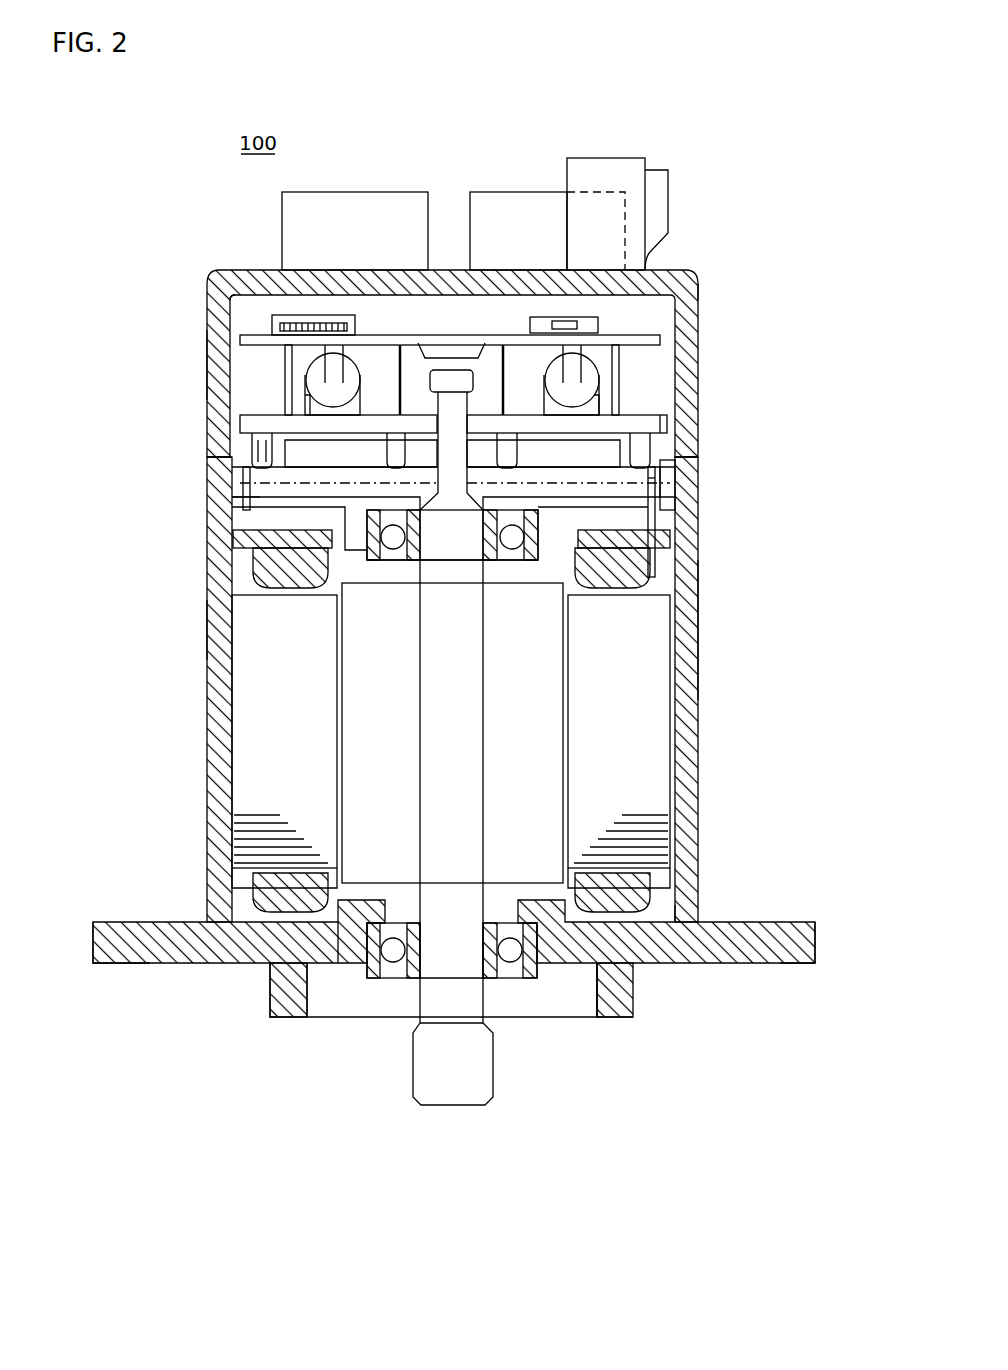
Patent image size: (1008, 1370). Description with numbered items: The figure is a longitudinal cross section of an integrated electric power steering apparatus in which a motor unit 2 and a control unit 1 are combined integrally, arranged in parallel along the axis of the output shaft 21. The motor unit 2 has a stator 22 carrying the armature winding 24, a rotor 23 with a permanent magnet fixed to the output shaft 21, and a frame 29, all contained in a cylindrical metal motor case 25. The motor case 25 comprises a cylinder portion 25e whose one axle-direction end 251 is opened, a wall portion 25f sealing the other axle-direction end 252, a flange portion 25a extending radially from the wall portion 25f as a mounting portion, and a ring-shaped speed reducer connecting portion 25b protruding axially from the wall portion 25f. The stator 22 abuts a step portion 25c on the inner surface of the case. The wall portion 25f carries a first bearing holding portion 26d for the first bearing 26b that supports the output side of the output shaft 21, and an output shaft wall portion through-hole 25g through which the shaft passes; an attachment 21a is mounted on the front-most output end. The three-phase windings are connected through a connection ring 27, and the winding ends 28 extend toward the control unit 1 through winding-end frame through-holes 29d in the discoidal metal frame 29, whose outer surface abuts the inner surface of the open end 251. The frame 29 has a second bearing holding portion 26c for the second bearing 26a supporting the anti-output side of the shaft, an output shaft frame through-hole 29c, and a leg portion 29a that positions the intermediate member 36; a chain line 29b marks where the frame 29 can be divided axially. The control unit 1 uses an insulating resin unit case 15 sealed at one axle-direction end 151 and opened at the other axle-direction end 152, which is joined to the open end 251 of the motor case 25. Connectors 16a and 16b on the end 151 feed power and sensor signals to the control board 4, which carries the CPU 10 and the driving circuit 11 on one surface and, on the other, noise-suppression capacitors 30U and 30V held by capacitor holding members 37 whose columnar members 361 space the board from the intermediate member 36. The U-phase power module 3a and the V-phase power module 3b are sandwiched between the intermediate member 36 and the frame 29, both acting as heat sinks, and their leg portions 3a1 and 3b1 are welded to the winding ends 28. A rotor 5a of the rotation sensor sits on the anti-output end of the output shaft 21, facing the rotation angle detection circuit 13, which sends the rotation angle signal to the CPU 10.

The control unit 1 is at (700, 302).
The motor unit 2 is at (698, 836).
The control board 4 is at (620, 335).
The rotor of the rotation sensor 5a is at (472, 370).
The CPU 10 is at (290, 322).
The driving circuit 11 is at (690, 276).
The rotation angle detection circuit 13 is at (456, 343).
The unit case 15 is at (232, 342).
The connector 16a is at (660, 172).
The connector 16b is at (478, 190).
The output shaft 21 is at (485, 1002).
The attachment 21a is at (420, 1107).
The stator 22 is at (660, 775).
The rotor 23 is at (347, 702).
The armature winding 24 is at (698, 620).
The motor case 25 is at (213, 813).
The flange portion 25a is at (790, 965).
The speed reducer connecting portion 25b is at (270, 995).
The step portion 25c is at (183, 930).
The cylinder portion 25e is at (215, 633).
The wall portion 25f is at (612, 968).
The output shaft wall portion through-hole 25g is at (268, 945).
The second bearing 26a is at (300, 593).
The first bearing 26b is at (395, 982).
The second bearing holding portion 26c is at (650, 540).
The first bearing holding portion 26d is at (347, 908).
The connection ring 27 is at (240, 545).
The winding end 28 is at (235, 510).
The frame 29 is at (656, 500).
The leg portion 29a is at (676, 470).
The chain line 29b is at (240, 483).
The output shaft frame through-hole 29c is at (240, 497).
The winding-end frame through-hole 29d is at (656, 478).
The noise-suppression capacitor 30U is at (300, 405).
The noise-suppression capacitor 30V is at (605, 398).
The intermediate member 36 is at (667, 433).
The columnar member 361 is at (640, 352).
The capacitor holding member 37 is at (752, 345).
The U-phase power module 3a is at (250, 447).
The leg portion 3a1 is at (256, 430).
The V-phase power module 3b is at (667, 428).
The leg portion 3b1 is at (668, 420).
The one axle-direction end 151 is at (245, 275).
The other axle-direction end 152 is at (207, 458).
The one axle-direction end 251 is at (698, 458).
The other axle-direction end 252 is at (698, 905).